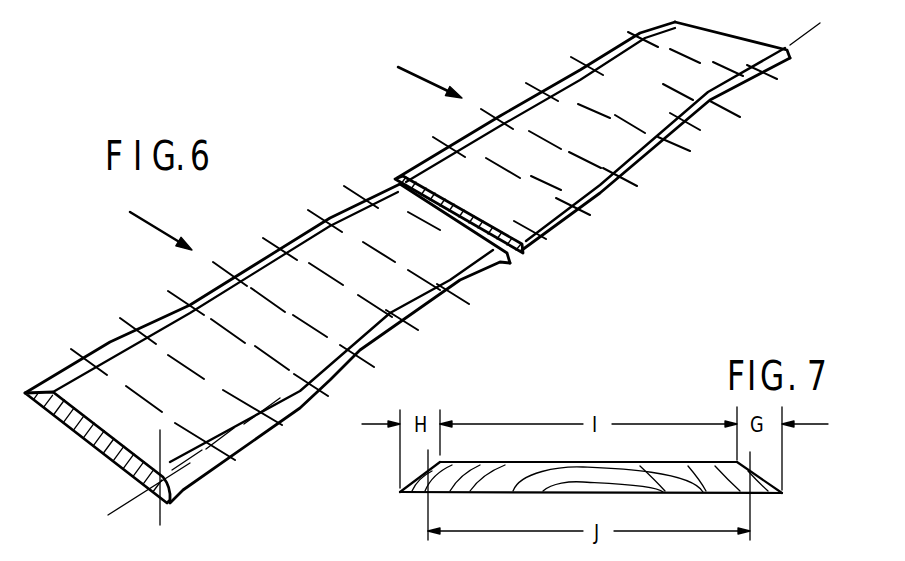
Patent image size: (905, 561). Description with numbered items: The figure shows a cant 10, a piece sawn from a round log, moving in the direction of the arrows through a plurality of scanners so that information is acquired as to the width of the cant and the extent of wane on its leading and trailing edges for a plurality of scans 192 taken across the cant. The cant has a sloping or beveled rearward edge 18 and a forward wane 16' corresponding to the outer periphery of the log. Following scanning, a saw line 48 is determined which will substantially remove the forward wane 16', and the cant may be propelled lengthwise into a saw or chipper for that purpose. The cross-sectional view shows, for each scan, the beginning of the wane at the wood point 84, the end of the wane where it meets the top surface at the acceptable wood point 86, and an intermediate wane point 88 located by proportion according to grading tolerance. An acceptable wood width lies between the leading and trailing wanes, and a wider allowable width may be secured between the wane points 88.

In FIG. 6, the cant 10 is at (97, 447).
In FIG. 6, the rearward edge 18 is at (428, 162).
In FIG. 6, the forward wane 16' is at (656, 157).
In FIG. 6, the saw line 48 is at (256, 422).
In FIG. 6, the scans 192 is at (262, 355).
In FIG. 7, the wood point 84 is at (785, 493).
In FIG. 7, the acceptable wood point 86 is at (737, 463).
In FIG. 7, the wane point 88 is at (430, 470).